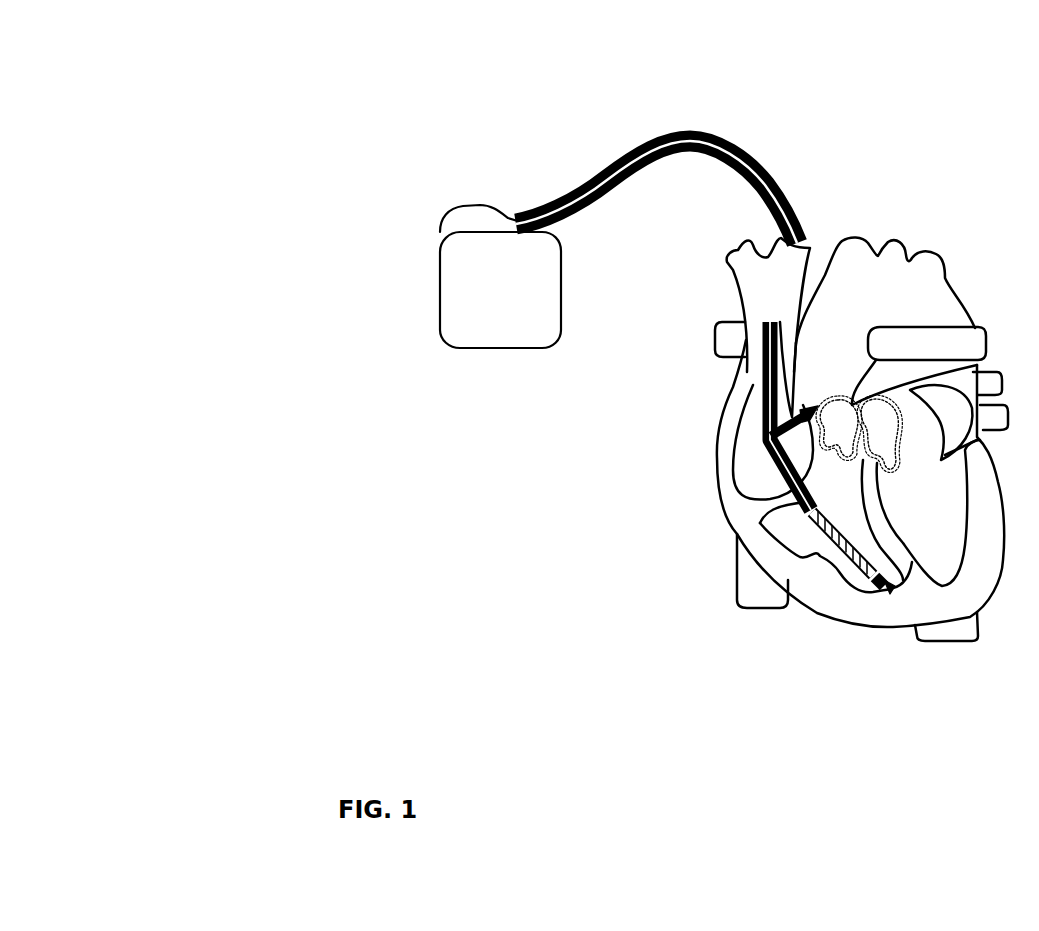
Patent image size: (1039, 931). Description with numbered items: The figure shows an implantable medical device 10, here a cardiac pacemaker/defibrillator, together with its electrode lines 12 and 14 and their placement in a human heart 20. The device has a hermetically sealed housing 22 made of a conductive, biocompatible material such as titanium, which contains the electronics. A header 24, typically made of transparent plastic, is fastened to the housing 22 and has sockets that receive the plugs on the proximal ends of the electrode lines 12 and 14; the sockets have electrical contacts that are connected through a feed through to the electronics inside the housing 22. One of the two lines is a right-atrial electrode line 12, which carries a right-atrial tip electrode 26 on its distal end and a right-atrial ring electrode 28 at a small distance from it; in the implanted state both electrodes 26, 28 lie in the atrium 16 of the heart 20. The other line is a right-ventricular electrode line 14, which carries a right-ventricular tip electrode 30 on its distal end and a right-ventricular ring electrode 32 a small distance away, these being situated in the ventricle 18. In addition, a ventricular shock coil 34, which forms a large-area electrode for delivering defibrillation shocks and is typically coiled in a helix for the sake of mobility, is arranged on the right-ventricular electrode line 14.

The implantable medical device 10 is at (393, 295).
The right-atrial electrode line 12 is at (613, 169).
The right-ventricular electrode line 14 is at (669, 156).
The atrium 16 is at (755, 470).
The ventricle 18 is at (815, 548).
The heart 20 is at (672, 530).
The housing 22 is at (465, 318).
The header 24 is at (465, 218).
The right-atrial tip electrode 26 is at (815, 412).
The right-atrial ring electrode 28 is at (800, 425).
The right-ventricular tip electrode 30 is at (893, 588).
The right-ventricular ring electrode 32 is at (882, 585).
The ventricular shock coil 34 is at (812, 520).